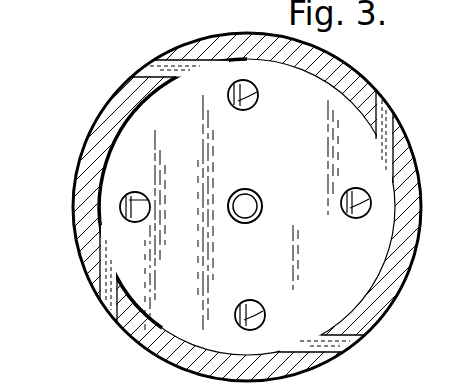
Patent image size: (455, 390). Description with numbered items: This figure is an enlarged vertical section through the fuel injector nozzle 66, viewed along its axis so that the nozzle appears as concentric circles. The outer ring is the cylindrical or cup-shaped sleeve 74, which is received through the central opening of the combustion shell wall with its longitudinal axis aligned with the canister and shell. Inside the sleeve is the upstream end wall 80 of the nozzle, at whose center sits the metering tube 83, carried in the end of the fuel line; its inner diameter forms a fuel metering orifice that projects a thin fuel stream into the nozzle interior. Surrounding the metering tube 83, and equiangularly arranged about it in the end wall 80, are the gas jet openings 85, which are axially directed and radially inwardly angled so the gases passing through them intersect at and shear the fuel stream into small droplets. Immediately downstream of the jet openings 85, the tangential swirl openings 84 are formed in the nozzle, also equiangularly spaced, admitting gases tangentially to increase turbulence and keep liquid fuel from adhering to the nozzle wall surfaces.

The fuel injector nozzle 66 is at (80, 125).
The cylindrical or cup-shaped sleeve 74 is at (392, 290).
The upstream end wall 80 is at (196, 292).
The metering tube 83 is at (262, 197).
The tangential swirl openings 84 is at (140, 73).
The gas jet openings 85 is at (253, 104).